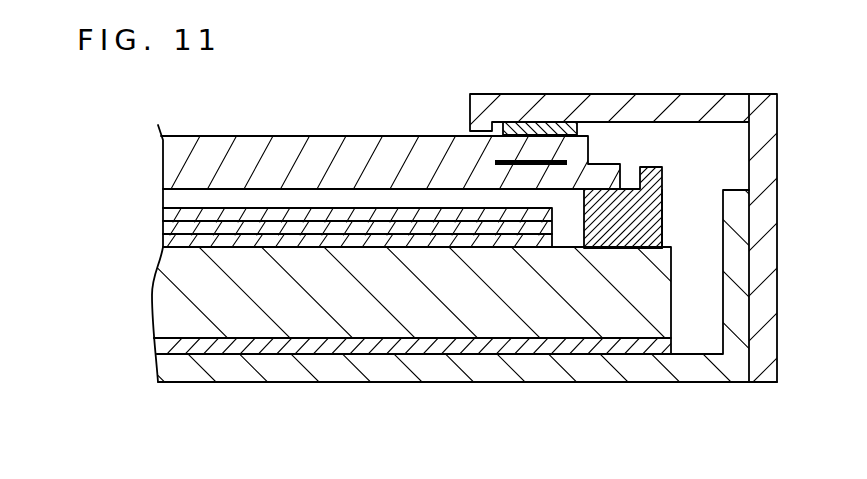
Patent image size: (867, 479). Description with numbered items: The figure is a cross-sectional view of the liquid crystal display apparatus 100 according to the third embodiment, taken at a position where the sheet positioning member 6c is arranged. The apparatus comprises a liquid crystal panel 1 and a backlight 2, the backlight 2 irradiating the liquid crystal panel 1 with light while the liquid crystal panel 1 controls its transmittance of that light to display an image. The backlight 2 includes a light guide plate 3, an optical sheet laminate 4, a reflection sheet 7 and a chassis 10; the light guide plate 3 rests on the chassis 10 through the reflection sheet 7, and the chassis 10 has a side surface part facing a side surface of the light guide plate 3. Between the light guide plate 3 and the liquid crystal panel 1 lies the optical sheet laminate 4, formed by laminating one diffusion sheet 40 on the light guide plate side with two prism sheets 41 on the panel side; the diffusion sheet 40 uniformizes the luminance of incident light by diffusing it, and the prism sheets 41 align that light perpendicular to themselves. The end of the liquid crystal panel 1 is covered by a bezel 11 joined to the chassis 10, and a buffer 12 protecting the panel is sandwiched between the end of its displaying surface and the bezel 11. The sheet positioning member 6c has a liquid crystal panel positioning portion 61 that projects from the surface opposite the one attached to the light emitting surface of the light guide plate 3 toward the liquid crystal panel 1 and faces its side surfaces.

The liquid crystal display apparatus 100 is at (427, 72).
The bezel 11 is at (770, 121).
The chassis 10 is at (542, 370).
The buffer 12 is at (578, 128).
The liquid crystal panel positioning portion 61 is at (653, 167).
The sheet positioning member 6c is at (667, 208).
The backlight 2 is at (75, 268).
The liquid crystal panel 1 is at (167, 175).
The optical sheet laminate 4 is at (87, 192).
The prism sheets 41 is at (164, 228).
The diffusion sheet 40 is at (164, 238).
The light guide plate 3 is at (168, 295).
The reflection sheet 7 is at (168, 345).